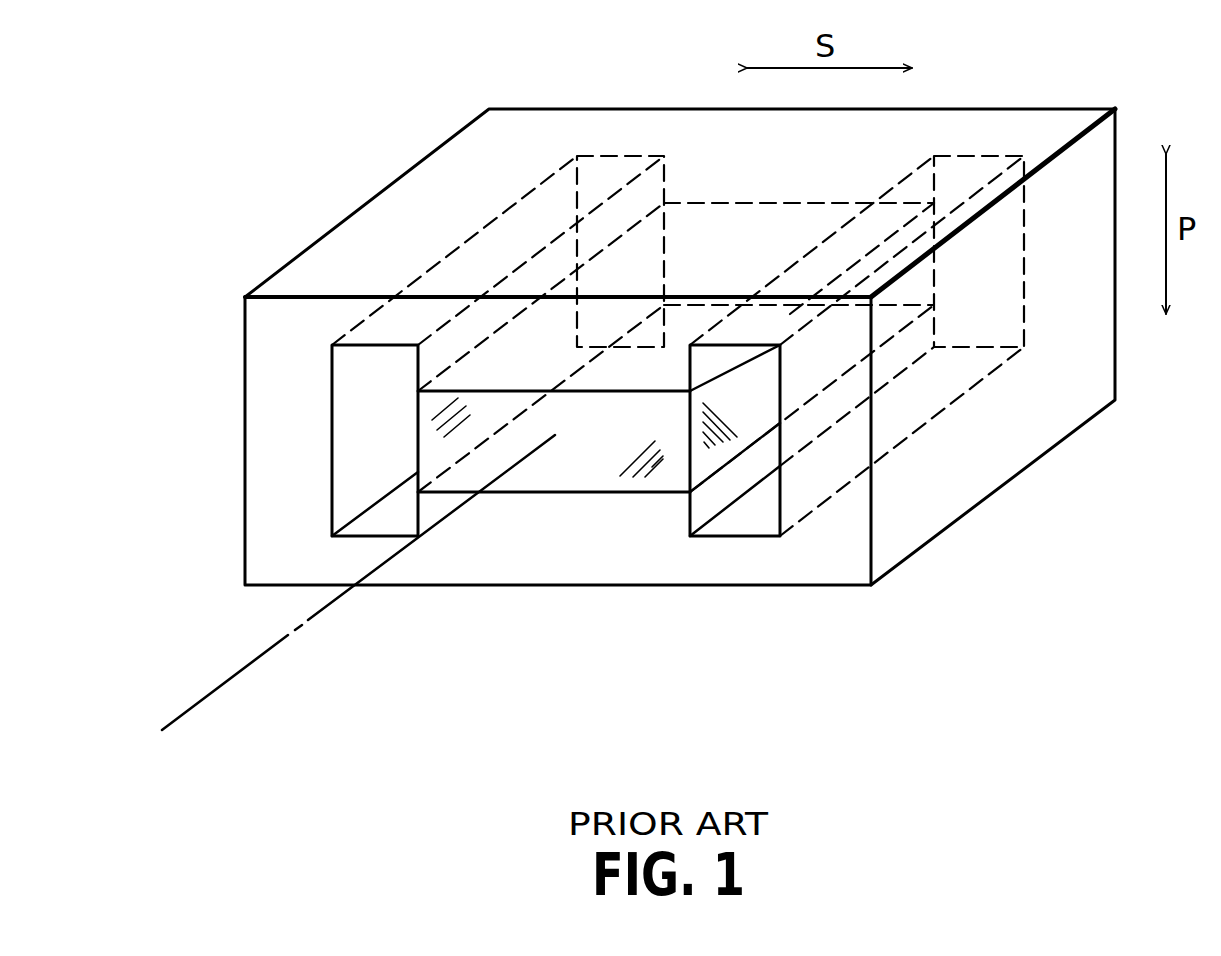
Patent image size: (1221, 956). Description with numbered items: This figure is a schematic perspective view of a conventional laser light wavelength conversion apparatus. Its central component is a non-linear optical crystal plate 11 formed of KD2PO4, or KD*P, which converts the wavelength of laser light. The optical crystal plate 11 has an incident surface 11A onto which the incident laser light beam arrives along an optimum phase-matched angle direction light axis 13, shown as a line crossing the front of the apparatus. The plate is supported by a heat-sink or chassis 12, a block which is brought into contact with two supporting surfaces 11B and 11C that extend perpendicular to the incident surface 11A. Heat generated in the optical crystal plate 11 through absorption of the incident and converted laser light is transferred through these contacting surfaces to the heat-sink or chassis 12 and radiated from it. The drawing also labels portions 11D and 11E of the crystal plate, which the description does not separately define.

The non-linear optical crystal plate 11 is at (477, 468).
The incident surface 11A is at (587, 460).
The supporting surface 11B is at (667, 388).
The supporting surface 11C is at (650, 495).
The right leg of core 11D is at (740, 403).
The left leg of core 11E is at (417, 455).
The heat-sink or chassis 12 is at (508, 557).
The optimum phase-matched angle direction light axis 13 is at (273, 653).